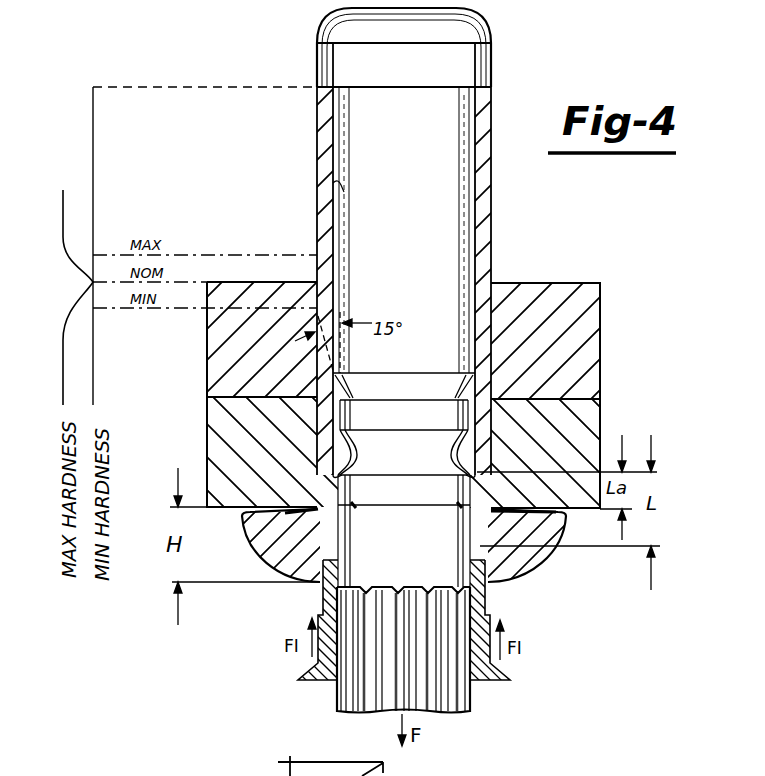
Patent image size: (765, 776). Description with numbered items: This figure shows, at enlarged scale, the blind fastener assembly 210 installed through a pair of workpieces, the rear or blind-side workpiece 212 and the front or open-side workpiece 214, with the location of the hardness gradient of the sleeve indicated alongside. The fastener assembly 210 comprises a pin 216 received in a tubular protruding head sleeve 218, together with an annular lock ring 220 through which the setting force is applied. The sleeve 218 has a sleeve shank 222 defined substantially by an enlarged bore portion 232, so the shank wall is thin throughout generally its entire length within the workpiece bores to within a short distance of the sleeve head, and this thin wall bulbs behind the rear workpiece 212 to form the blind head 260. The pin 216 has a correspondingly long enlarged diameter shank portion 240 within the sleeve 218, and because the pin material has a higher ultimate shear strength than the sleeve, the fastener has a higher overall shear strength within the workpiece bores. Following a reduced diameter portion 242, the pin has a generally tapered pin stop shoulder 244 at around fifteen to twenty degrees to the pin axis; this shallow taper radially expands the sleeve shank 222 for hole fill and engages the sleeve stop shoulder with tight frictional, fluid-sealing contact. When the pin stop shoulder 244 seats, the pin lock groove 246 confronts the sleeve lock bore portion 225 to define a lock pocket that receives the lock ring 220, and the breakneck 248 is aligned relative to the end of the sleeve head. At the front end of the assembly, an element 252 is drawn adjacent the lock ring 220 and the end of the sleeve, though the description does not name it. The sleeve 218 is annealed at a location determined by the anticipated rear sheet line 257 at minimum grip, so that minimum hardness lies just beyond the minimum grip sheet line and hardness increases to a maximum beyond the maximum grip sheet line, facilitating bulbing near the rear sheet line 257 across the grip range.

The protruding head fastener assembly 210 is at (331, 691).
The rear workpiece 212 is at (600, 335).
The front workpiece 214 is at (600, 414).
The pin 216 is at (486, 22).
The protruding head sleeve 218 is at (494, 122).
The lock ring 220 is at (489, 605).
The sleeve shank 222 is at (318, 118).
The sleeve lock bore portion 225 is at (489, 601).
The enlarged bore portion 232 is at (344, 192).
The enlarged diameter shank portion 240 is at (421, 132).
The reduced diameter portion 242 is at (425, 410).
The pin stop shoulder 244 is at (362, 388).
The pin lock groove 246 is at (420, 460).
The breakneck 248 is at (394, 505).
The anvil foot 252 is at (480, 702).
The rear sheet line 257 is at (536, 283).
The blind head 260 is at (304, 668).